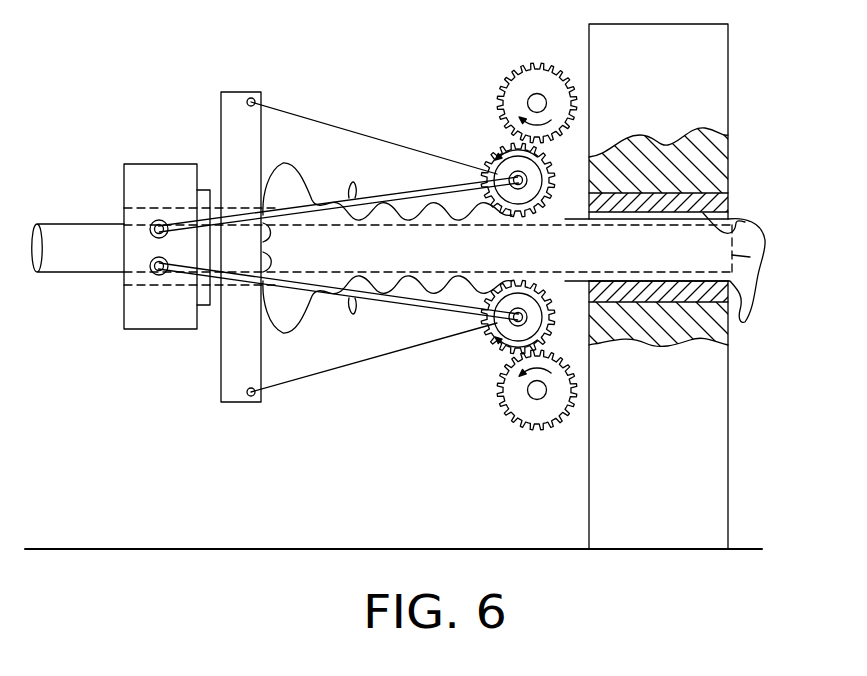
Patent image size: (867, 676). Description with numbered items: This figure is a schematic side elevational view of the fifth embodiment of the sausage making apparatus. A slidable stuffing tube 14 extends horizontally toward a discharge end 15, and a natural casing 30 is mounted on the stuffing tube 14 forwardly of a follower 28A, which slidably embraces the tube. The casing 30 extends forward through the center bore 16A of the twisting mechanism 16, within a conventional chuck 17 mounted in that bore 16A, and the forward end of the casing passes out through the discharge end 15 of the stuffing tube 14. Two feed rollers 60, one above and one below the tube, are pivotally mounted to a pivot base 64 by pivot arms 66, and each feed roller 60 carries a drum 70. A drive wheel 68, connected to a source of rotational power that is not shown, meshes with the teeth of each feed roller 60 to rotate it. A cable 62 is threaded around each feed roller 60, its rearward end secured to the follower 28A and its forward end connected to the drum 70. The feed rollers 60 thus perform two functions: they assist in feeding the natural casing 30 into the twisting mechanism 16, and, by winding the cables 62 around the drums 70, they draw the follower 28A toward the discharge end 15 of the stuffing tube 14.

The stuffing tube 14 is at (80, 260).
The discharge end 15 is at (766, 270).
The twisting mechanism 16 is at (728, 80).
The center bore 16A is at (765, 222).
The chuck 17 is at (690, 195).
The follower 28A is at (245, 97).
The natural casing 30 is at (300, 175).
The feed rollers 60 is at (483, 160).
The cable 62 is at (383, 143).
The pivot base 64 is at (159, 175).
The pivot arm 66 is at (385, 193).
The drive wheel 68 is at (535, 82).
The drum 70 is at (490, 158).